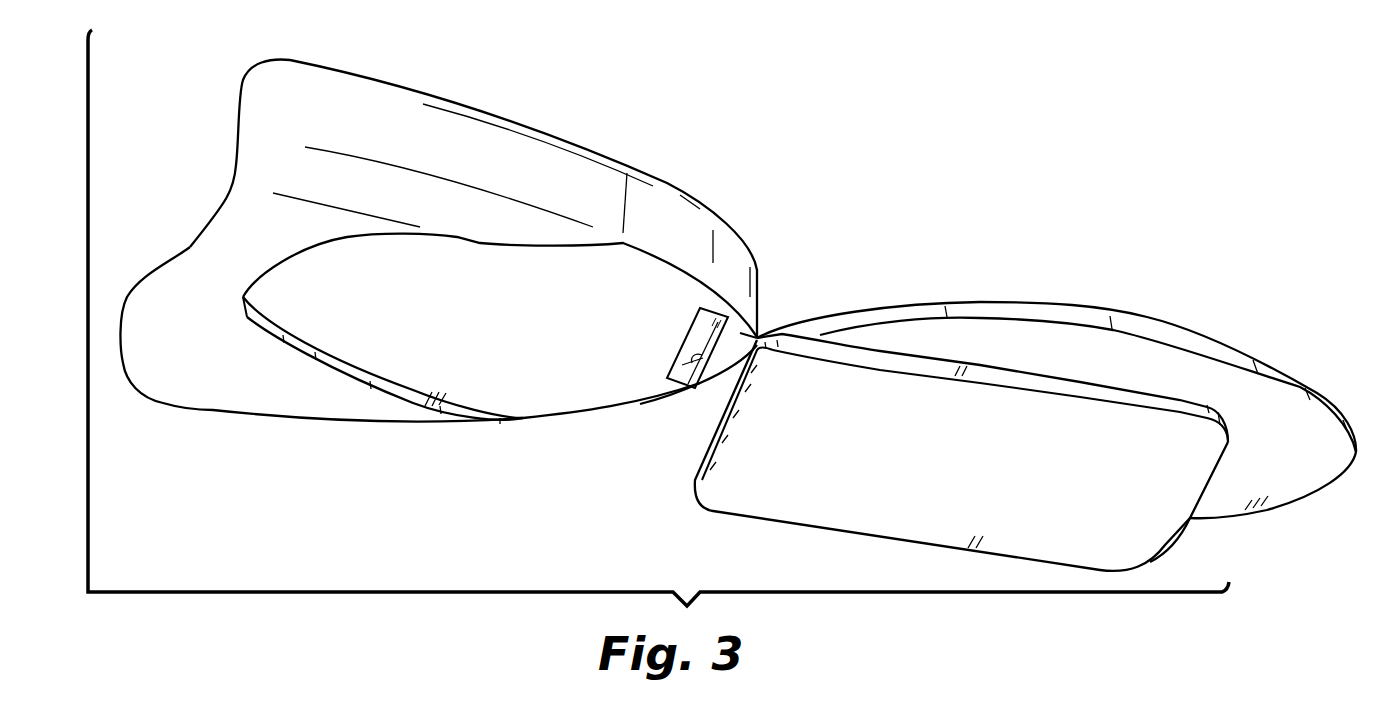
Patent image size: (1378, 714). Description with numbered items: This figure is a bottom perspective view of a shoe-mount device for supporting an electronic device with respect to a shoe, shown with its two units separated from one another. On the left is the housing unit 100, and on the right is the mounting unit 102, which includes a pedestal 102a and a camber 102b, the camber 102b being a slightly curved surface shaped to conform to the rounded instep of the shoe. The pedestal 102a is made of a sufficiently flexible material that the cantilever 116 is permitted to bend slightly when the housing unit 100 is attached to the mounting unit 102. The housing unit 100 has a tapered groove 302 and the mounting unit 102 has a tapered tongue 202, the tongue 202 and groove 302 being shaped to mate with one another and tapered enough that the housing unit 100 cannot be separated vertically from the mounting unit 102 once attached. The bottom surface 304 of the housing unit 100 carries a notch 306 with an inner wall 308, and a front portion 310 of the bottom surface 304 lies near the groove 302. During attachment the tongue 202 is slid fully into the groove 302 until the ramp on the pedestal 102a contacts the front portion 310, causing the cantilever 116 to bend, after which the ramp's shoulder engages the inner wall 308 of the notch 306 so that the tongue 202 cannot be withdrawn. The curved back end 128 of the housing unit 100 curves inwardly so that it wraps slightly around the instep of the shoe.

The housing unit 100 is at (551, 122).
The mounting unit 102 is at (1156, 311).
The pedestal 102a is at (1320, 358).
The camber 102b is at (1150, 552).
The cantilever 116 is at (1327, 477).
The curved back end 128 is at (237, 195).
The tapered tongue 202 is at (1000, 313).
The tapered groove 302 is at (343, 373).
The bottom surface 304 is at (563, 383).
The notch 306 is at (695, 340).
The inner wall 308 is at (690, 390).
The front portion 310 is at (758, 338).